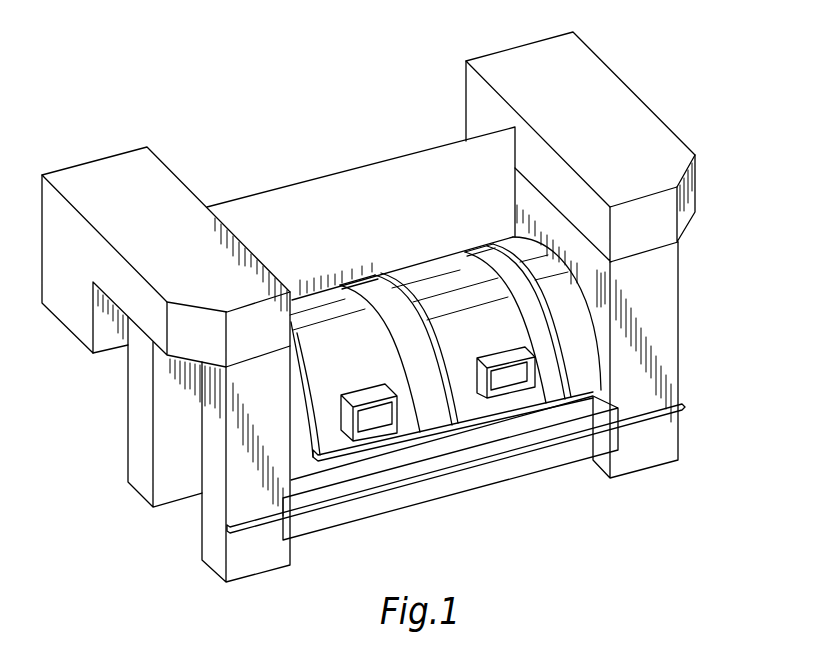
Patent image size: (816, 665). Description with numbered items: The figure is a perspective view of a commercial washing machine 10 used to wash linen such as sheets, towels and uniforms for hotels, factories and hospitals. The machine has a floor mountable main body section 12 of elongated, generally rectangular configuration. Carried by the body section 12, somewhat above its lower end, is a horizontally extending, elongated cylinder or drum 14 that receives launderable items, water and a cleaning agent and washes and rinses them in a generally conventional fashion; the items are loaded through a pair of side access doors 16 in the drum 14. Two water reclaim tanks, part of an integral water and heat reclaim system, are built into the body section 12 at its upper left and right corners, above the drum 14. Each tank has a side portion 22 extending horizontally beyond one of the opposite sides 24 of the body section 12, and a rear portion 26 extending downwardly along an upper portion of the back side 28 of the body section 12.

The commercial washing machine 10 is at (323, 130).
The main body section 12 is at (129, 431).
The drum 14 is at (510, 240).
The side access doors 16 is at (325, 305).
The side portion 22 is at (647, 101).
The opposite sides 24 is at (681, 323).
The rear portion 26 is at (70, 336).
The back side 28 is at (127, 404).